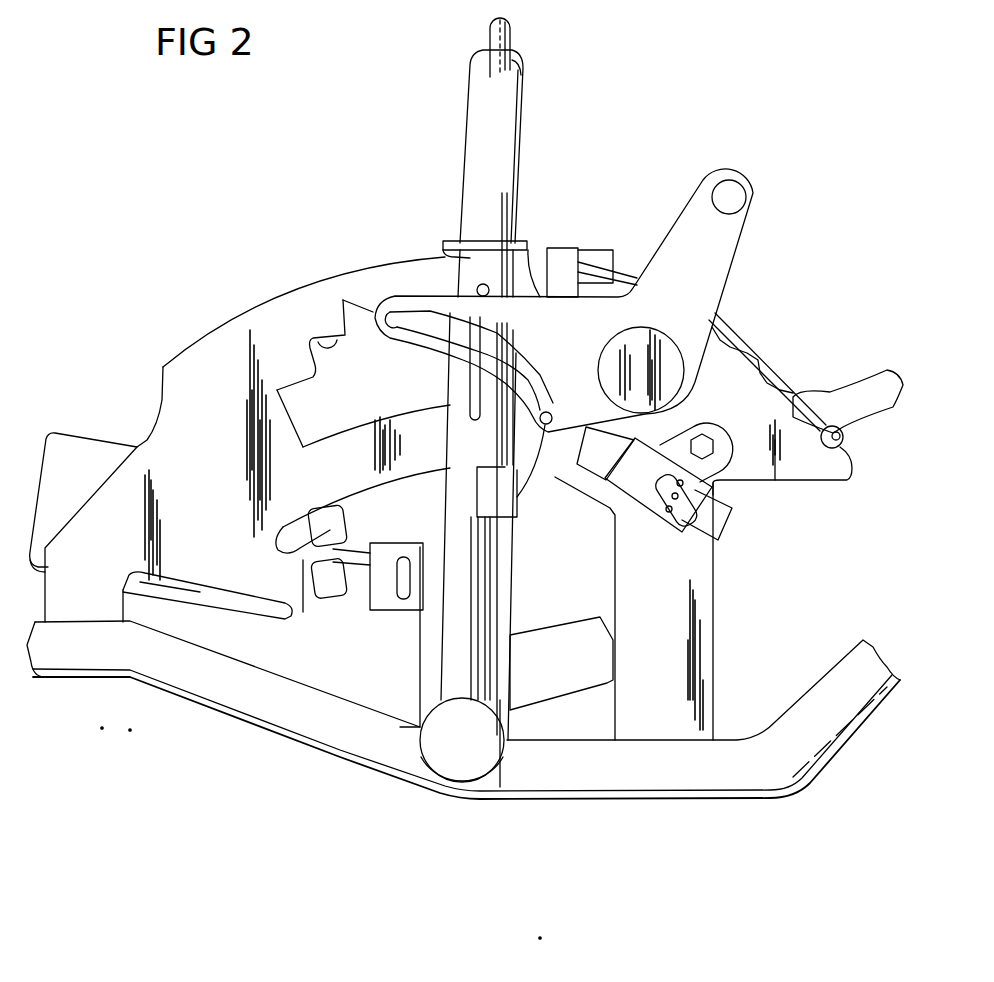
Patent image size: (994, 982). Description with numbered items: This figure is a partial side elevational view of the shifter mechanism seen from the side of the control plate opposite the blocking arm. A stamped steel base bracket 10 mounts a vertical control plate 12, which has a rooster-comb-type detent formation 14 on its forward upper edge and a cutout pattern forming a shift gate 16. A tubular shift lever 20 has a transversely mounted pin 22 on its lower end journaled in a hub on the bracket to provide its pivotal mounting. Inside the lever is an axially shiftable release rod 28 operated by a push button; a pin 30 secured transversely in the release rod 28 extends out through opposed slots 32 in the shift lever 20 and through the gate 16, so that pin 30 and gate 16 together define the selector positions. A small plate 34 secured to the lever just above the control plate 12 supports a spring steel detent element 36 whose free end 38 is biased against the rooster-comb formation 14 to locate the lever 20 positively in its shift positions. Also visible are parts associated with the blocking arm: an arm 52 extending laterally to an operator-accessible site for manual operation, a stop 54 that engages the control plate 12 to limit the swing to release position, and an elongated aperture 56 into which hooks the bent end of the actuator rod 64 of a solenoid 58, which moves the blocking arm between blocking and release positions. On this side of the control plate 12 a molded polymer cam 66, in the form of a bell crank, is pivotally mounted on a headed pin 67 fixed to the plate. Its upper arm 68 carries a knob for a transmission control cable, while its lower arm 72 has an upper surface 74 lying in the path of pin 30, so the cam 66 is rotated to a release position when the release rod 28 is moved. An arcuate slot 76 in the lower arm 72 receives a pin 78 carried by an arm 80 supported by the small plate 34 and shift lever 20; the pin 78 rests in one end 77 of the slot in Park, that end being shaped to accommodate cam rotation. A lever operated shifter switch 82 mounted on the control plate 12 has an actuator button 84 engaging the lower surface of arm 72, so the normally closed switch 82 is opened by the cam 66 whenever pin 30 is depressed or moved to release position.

The base bracket 10 is at (353, 737).
The control plate 12 is at (195, 360).
The rooster-comb-type detent formation 14 is at (773, 380).
The shift gate 16 is at (305, 320).
The shift lever 20 is at (507, 94).
The pin 22 is at (473, 770).
The release rod 28 is at (492, 28).
The pin 30 is at (477, 288).
The slots 32 is at (470, 398).
The small plate 34 is at (563, 245).
The detent element 36 is at (760, 345).
The free end 38 is at (853, 455).
The arm 52 is at (880, 407).
The stop 54 is at (557, 680).
The elongated aperture 56 is at (405, 600).
The solenoid 58 is at (93, 450).
The actuator rod 64 is at (353, 560).
The cam 66 is at (730, 277).
The headed pin 67 is at (686, 378).
The upper arm 68 is at (728, 237).
The lower arm 72 is at (378, 308).
The upper surface 74 is at (520, 297).
The arcuate slot 76 is at (447, 357).
The end of slot 77 is at (507, 387).
The pin 78 is at (490, 485).
The arm 80 is at (485, 505).
The shifter switch 82 is at (640, 500).
The actuator button 84 is at (602, 472).